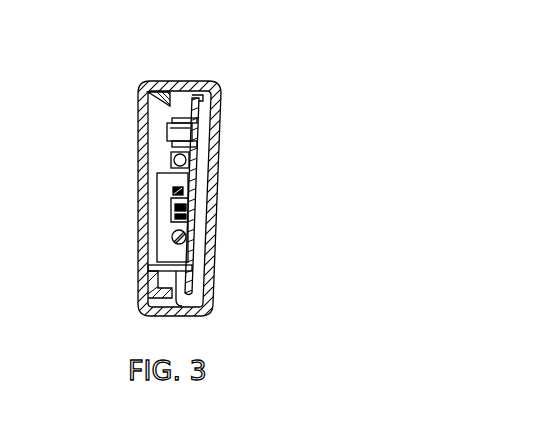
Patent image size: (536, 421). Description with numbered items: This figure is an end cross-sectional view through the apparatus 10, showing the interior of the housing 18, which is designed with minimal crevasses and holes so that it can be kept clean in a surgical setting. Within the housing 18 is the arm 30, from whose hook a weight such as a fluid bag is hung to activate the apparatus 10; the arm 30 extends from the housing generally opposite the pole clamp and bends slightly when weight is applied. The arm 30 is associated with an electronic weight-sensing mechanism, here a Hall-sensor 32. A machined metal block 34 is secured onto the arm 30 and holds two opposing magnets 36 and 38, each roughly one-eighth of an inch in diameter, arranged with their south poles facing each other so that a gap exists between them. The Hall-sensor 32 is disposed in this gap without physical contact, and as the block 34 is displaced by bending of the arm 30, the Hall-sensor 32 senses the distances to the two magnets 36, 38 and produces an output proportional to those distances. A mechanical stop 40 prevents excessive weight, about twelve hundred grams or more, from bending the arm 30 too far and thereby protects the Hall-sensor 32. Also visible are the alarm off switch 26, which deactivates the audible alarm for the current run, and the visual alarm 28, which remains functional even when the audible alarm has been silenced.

The apparatus 10 is at (292, 66).
The housing 18 is at (218, 226).
The alarm off switch 26 is at (167, 132).
The visual alarm 28 is at (174, 158).
The arm 30 is at (186, 239).
The Hall-sensor 32 is at (201, 207).
The machined metal block 34 is at (157, 258).
The magnet 36 is at (173, 190).
The magnet 38 is at (172, 222).
The mechanical stop 40 is at (187, 314).